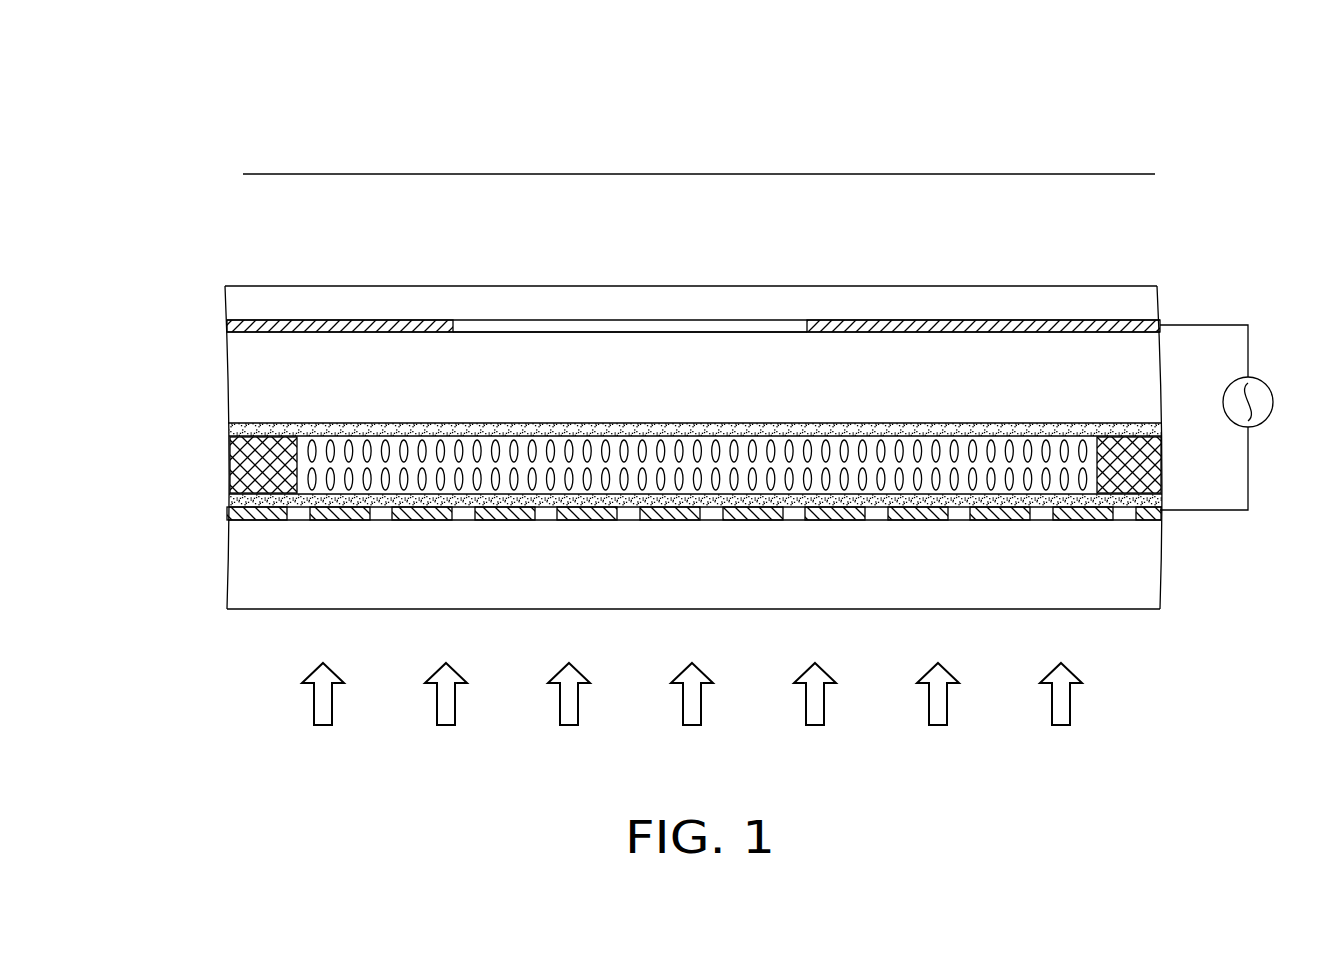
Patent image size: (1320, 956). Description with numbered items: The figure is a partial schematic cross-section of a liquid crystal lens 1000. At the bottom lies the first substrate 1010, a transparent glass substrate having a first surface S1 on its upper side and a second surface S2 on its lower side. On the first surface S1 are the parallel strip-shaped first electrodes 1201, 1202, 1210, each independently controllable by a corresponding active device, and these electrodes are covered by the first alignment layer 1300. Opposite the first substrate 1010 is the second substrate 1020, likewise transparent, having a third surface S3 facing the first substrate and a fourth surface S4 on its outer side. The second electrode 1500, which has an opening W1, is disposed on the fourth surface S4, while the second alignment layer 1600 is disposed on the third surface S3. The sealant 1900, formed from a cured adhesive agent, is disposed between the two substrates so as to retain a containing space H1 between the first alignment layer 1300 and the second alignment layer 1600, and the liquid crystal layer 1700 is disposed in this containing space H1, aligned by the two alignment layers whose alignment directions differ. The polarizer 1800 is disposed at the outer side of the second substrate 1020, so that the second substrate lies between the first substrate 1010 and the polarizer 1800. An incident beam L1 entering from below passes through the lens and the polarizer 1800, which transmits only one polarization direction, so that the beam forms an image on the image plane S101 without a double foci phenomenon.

The liquid crystal lens 1000 is at (1122, 648).
The image plane S101 is at (328, 173).
The second electrode 1500 is at (263, 322).
The second substrate 1020 is at (252, 352).
The second alignment layer 1600 is at (264, 426).
The liquid crystal layer 1700 is at (247, 432).
The sealant 1900 is at (233, 456).
The first alignment layer 1300 is at (233, 472).
The first electrode 1210 is at (344, 512).
The first electrode 1201 is at (1087, 510).
The first electrode 1202 is at (990, 512).
The first substrate 1010 is at (245, 578).
The polarizer 1800 is at (1150, 302).
The first surface S1 is at (287, 517).
The second surface S2 is at (259, 613).
The third surface S3 is at (452, 427).
The fourth surface S4 is at (354, 331).
The opening W1 is at (603, 331).
The containing space H1 is at (393, 485).
The incident beam L1 is at (316, 700).